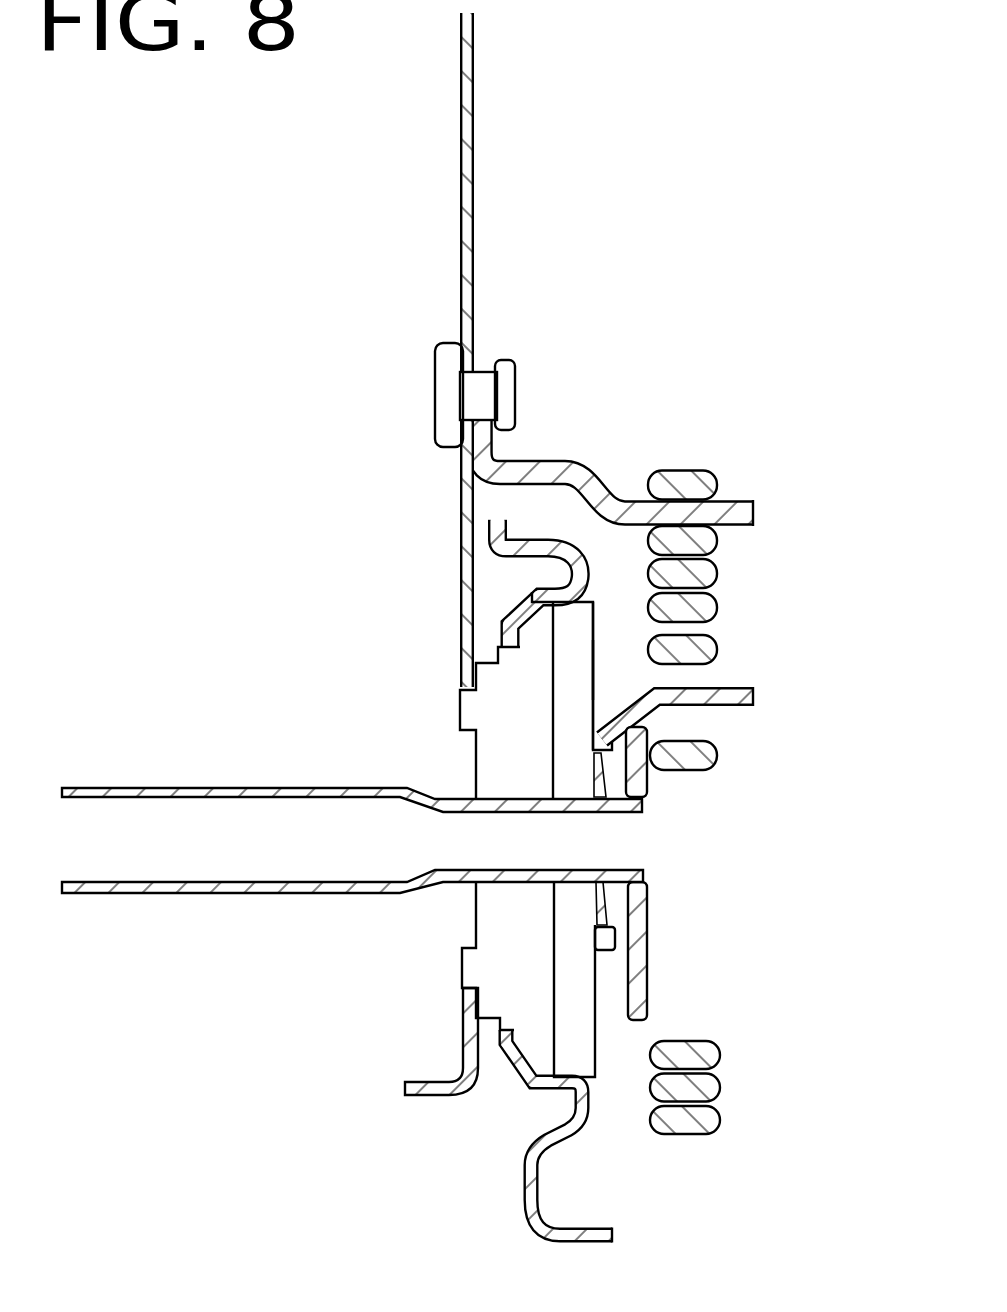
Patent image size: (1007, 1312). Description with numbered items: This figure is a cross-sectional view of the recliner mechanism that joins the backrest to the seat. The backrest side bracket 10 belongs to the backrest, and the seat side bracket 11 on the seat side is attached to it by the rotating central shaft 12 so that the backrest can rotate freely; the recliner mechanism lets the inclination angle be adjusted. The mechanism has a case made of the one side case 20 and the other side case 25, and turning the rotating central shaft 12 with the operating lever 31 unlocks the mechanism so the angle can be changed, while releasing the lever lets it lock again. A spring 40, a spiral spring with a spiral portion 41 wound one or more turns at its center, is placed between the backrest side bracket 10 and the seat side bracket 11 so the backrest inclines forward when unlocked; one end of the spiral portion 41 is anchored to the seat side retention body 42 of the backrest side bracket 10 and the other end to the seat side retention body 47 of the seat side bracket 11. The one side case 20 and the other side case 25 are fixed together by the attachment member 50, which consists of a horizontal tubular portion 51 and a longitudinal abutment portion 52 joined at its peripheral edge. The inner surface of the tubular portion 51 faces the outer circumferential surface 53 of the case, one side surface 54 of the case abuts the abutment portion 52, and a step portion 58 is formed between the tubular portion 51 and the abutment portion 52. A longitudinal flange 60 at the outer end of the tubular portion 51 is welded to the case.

The backrest side bracket 10 is at (478, 168).
The seat side bracket 11 is at (606, 1213).
The rotating central shaft 12 is at (125, 786).
The one side case 20 is at (474, 767).
The other side case 25 is at (604, 633).
The operating lever 31 is at (649, 957).
The spring 40 is at (715, 468).
The spiral portion 41 is at (714, 573).
The seat side retention body 42 is at (544, 528).
The seat side retention body 47 is at (742, 687).
The attachment member 50 is at (546, 556).
The tubular portion 51 is at (583, 580).
The abutment portion 52 is at (515, 636).
The outer circumferential surface 53 is at (566, 594).
The side surface 54 is at (516, 615).
The step portion 58 is at (517, 1075).
The flange 60 is at (656, 1095).